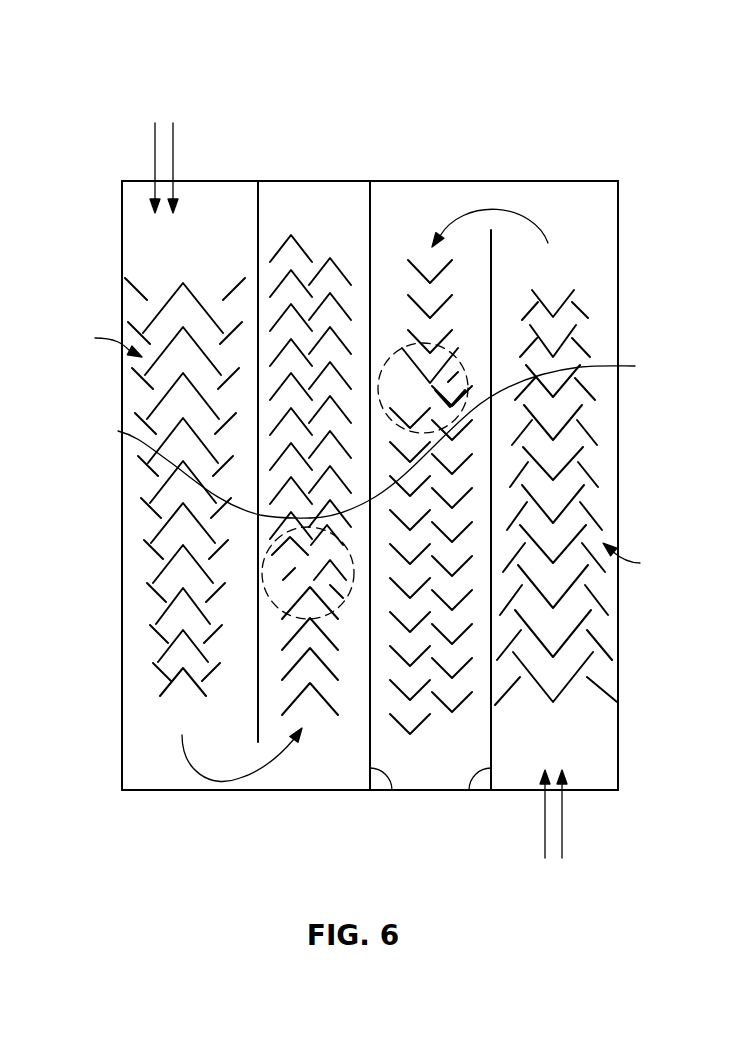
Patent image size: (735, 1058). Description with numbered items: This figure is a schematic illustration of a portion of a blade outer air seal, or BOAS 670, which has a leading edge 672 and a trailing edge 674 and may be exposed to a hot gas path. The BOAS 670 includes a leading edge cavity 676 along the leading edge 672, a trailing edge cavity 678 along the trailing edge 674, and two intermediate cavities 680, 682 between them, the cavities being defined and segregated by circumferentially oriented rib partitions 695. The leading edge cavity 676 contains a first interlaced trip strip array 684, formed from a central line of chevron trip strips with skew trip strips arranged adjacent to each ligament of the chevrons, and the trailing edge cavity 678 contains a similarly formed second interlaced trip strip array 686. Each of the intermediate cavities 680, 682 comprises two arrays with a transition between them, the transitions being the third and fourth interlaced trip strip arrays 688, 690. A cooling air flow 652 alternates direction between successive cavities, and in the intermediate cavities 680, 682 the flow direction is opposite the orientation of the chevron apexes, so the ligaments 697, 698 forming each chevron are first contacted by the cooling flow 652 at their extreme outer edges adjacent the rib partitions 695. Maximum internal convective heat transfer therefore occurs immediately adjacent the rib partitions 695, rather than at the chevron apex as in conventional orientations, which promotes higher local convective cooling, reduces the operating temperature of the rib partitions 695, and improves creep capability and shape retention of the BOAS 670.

The cooling air flow 652 is at (173, 170).
The blade outer air seal (BOAS) 670 is at (340, 181).
The leading edge 672 is at (122, 412).
The trailing edge 674 is at (618, 537).
The leading edge cavity 676 is at (222, 204).
The trailing edge cavity 678 is at (580, 201).
The intermediate cavity 680 is at (305, 195).
The intermediate cavity 682 is at (423, 197).
The first interlaced trip strip array 684 is at (94, 340).
The second interlaced trip strip array 686 is at (645, 560).
The third interlaced trip strip array 688 is at (262, 562).
The fourth interlaced trip strip array 690 is at (468, 383).
The rib partitions 695 is at (245, 690).
The ligament 697 is at (118, 431).
The ligament 698 is at (496, 435).